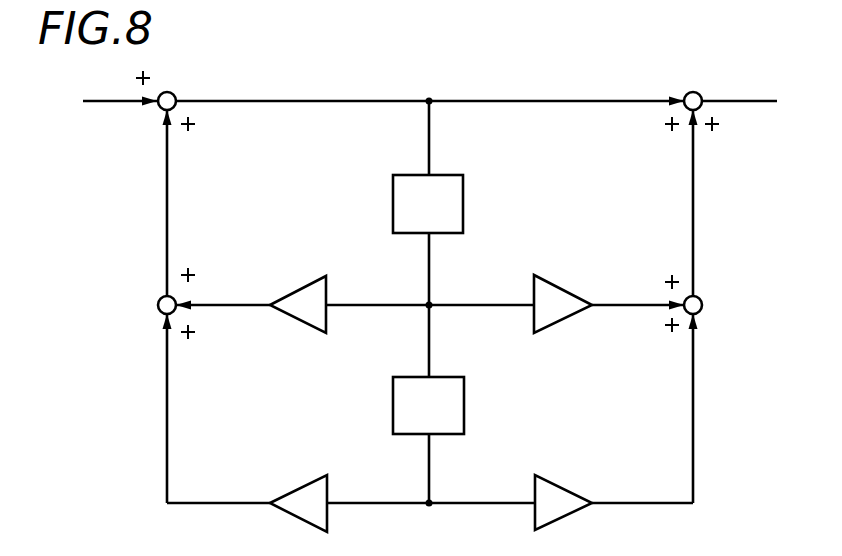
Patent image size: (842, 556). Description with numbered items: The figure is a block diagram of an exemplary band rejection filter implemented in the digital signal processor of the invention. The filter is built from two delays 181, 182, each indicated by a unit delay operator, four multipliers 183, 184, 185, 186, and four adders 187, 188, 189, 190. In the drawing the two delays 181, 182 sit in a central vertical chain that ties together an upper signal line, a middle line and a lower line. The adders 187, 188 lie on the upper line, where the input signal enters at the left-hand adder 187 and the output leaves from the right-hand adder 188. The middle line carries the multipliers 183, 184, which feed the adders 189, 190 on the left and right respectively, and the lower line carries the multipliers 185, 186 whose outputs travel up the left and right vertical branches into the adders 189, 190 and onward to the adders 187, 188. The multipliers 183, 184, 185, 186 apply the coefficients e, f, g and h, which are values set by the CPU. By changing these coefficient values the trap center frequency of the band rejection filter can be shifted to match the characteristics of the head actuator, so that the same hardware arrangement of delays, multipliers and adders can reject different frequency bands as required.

The delay 181 is at (463, 192).
The delay 182 is at (464, 405).
The multiplier 183 is at (312, 276).
The multiplier 184 is at (570, 288).
The multiplier 185 is at (303, 482).
The multiplier 186 is at (562, 483).
The adder 187 is at (175, 94).
The adder 188 is at (700, 94).
The adder 189 is at (176, 299).
The adder 190 is at (702, 299).